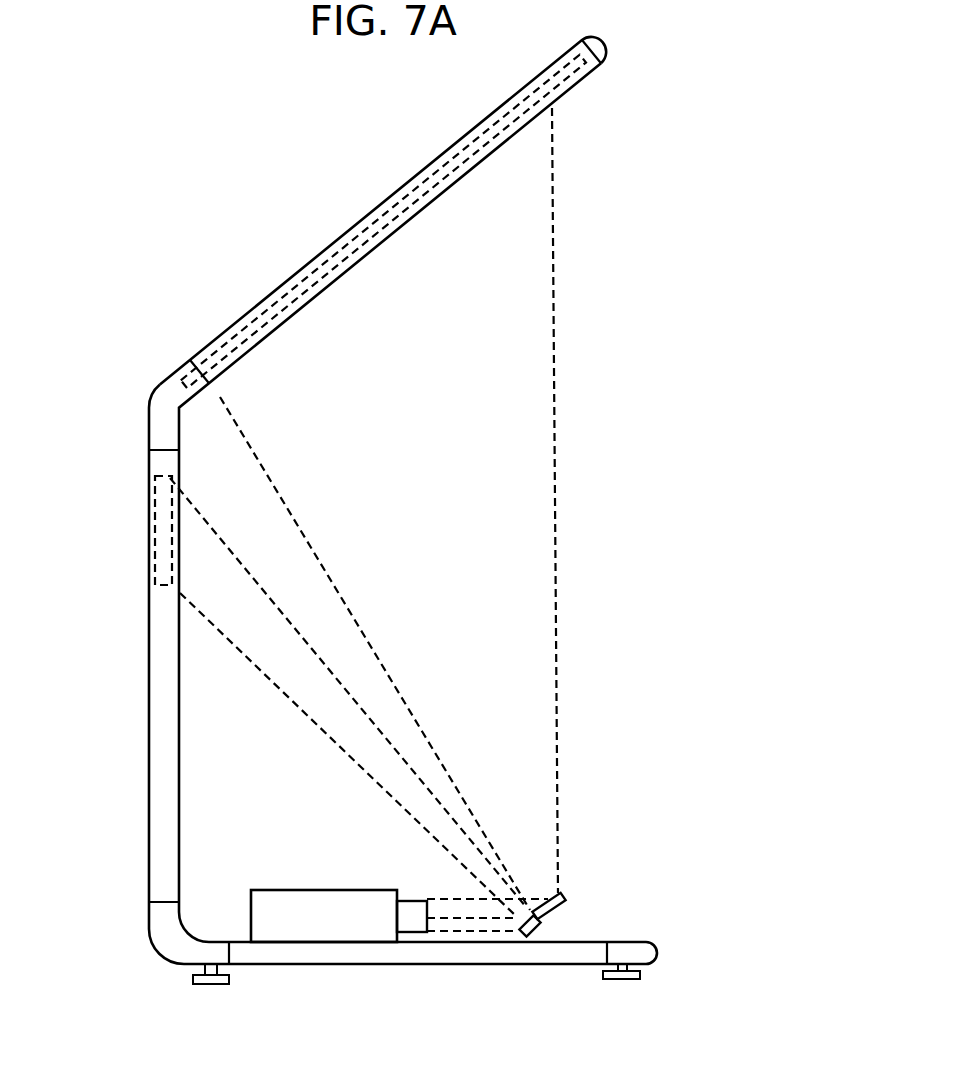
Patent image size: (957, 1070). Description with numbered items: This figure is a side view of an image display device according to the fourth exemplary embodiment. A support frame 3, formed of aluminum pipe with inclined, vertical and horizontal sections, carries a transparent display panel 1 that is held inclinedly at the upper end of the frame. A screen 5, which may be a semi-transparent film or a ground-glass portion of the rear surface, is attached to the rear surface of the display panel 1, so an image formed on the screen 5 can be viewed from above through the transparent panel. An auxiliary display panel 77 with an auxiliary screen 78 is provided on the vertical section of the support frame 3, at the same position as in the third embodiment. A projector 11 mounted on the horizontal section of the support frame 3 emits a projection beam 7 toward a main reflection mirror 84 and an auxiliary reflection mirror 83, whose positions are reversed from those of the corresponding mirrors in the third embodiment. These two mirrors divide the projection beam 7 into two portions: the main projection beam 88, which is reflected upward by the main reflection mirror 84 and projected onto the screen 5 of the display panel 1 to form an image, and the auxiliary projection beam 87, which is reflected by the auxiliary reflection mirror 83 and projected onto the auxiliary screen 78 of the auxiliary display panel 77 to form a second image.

The display panel 1 is at (430, 168).
The support frame 3 is at (163, 636).
The screen 5 is at (363, 268).
The projection beam 7 is at (455, 920).
The projector 11 is at (267, 902).
The auxiliary display panel 77 is at (150, 512).
The auxiliary screen 78 is at (180, 523).
The auxiliary reflection mirror 83 is at (531, 940).
The main reflection mirror 84 is at (565, 903).
The auxiliary projection beam 87 is at (245, 628).
The main projection beam 88 is at (535, 362).